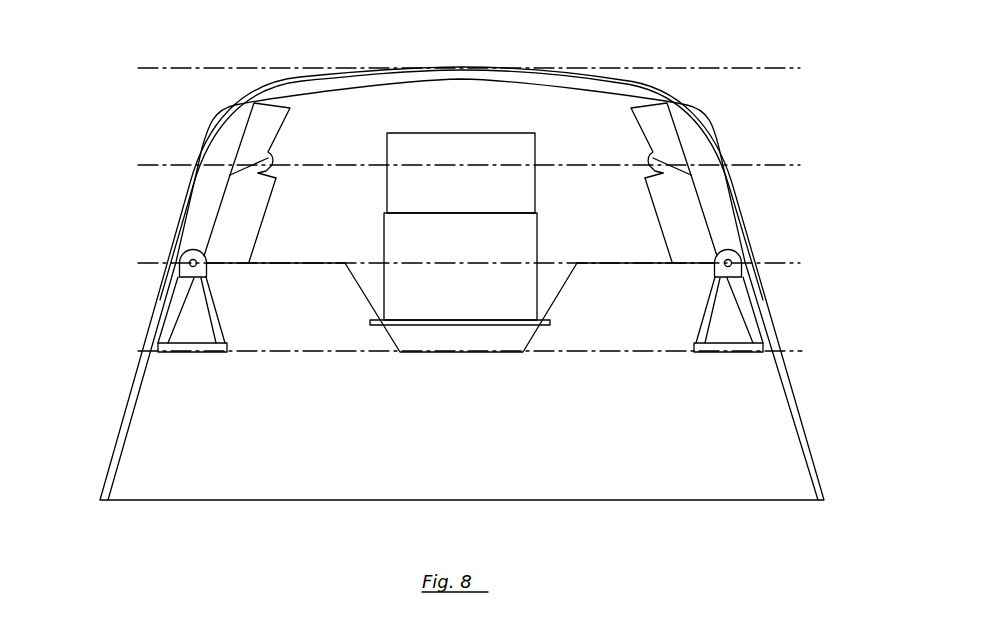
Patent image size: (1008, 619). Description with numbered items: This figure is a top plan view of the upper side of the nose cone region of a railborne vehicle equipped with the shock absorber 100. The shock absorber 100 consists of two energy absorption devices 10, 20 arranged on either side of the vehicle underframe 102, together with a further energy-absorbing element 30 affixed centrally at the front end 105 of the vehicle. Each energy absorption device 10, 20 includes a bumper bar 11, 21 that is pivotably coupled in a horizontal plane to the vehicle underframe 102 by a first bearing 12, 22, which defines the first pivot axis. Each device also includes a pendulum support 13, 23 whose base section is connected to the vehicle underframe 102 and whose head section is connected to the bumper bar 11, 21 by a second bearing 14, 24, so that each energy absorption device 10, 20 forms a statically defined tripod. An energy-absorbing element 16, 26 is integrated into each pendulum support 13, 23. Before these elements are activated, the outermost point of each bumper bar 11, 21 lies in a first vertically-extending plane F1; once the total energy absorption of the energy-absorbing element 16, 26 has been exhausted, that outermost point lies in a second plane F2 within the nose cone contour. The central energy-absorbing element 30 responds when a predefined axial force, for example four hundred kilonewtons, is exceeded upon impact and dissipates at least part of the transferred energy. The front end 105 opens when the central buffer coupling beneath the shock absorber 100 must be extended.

The shock absorber 100 is at (856, 122).
The vehicle underframe 102 is at (193, 445).
The front end 105 is at (452, 75).
The energy absorption device 10 is at (288, 378).
The bumper bar 11 is at (217, 202).
The first bearing 12 is at (187, 262).
The pendulum support 13 is at (235, 250).
The second bearing 14 is at (263, 155).
The energy-absorbing element 16 is at (249, 166).
The energy absorption device 20 is at (638, 378).
The bumper bar 21 is at (695, 155).
The first bearing 22 is at (735, 260).
The pendulum support 23 is at (668, 235).
The second bearing 24 is at (653, 155).
The energy-absorbing element 26 is at (672, 166).
The further energy-absorbing element 30 is at (460, 229).
The first vertically-extending plane F1 is at (290, 68).
The second plane F2 is at (402, 165).